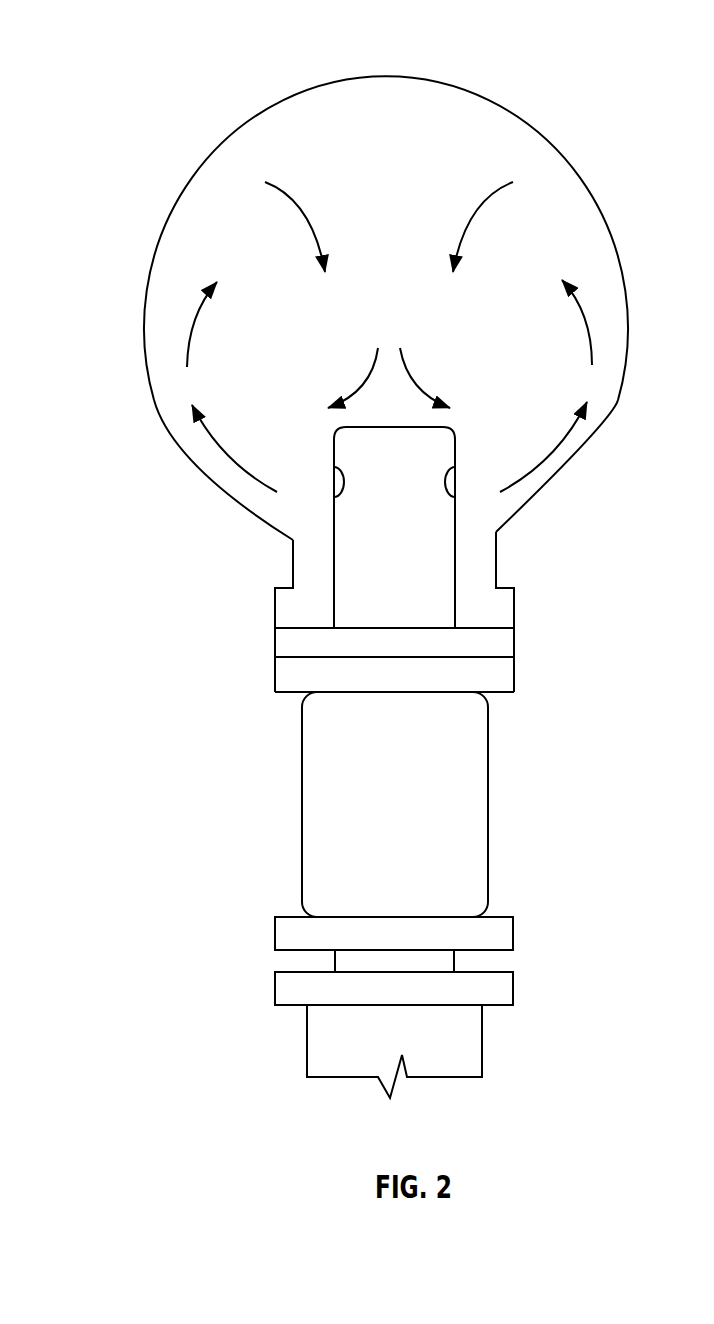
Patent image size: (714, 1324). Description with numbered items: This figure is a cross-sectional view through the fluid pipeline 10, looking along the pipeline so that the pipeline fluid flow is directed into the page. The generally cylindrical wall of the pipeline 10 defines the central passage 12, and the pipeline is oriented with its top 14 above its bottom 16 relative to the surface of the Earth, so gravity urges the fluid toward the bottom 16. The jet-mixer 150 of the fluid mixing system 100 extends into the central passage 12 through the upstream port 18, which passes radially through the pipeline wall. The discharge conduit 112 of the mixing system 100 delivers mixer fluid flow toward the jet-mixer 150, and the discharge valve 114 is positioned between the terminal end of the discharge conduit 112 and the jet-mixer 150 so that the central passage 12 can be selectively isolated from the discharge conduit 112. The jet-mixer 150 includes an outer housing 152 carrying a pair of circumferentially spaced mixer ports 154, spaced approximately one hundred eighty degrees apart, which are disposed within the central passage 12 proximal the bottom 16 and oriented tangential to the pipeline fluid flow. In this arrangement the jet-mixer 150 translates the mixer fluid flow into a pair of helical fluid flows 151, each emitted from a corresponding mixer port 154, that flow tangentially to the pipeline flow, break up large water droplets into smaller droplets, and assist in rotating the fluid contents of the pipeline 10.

The fluid pipeline 10 is at (138, 80).
The central passage 12 is at (397, 220).
The top 14 is at (388, 76).
The bottom 16 is at (497, 552).
The upstream port 18 is at (292, 563).
The fluid mixing system 100 is at (137, 768).
The discharge conduit 112 is at (477, 1043).
The discharge valve 114 is at (477, 815).
The jet-mixer 150 is at (432, 573).
The outer housing 152 is at (394, 527).
The mixer ports 154 is at (344, 487).
The helical fluid flows 151 is at (217, 463).